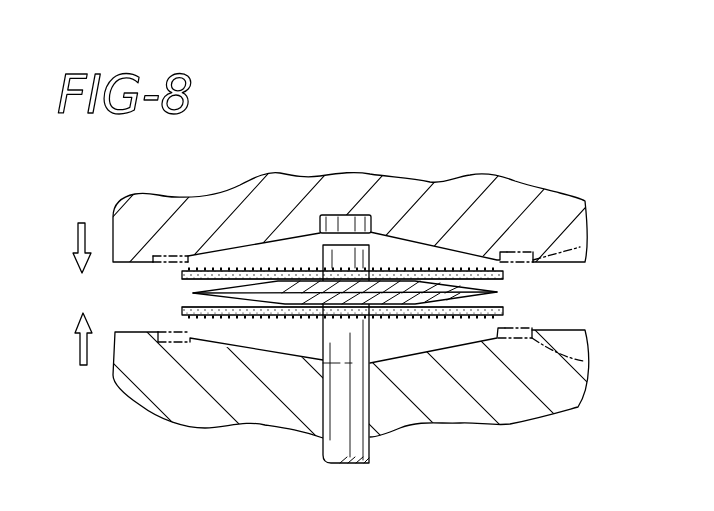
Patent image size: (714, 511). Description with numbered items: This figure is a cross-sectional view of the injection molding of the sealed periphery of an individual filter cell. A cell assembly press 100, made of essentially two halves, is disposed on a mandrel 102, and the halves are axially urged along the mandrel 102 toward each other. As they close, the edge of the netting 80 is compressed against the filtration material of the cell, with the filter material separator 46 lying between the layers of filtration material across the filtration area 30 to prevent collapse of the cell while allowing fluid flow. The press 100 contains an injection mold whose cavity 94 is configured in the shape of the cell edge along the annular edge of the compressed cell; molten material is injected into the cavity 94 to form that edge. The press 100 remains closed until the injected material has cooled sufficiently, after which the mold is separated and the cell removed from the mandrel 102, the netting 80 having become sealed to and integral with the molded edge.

The cell assembly press 100 is at (520, 190).
The mandrel 102 is at (323, 252).
The cavity 94 is at (583, 247).
The netting 80 is at (186, 268).
The filtration area 30 is at (192, 292).
The filter material separator 46 is at (500, 292).